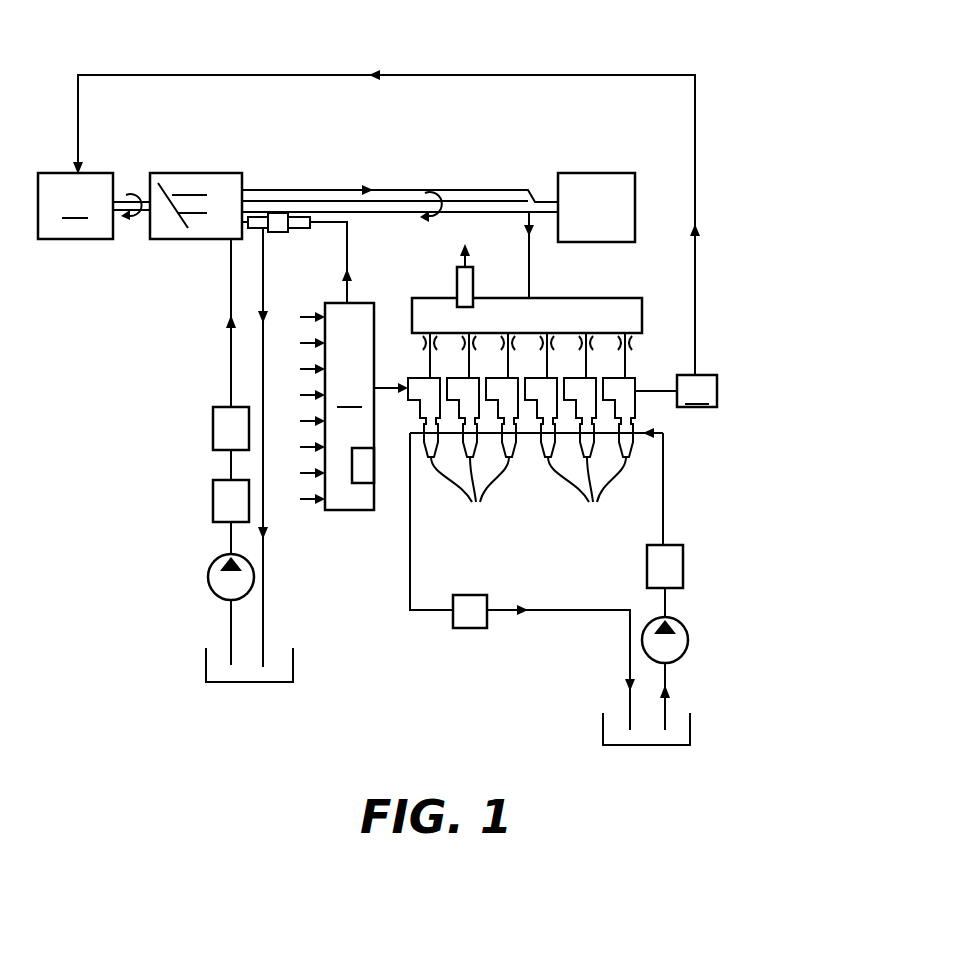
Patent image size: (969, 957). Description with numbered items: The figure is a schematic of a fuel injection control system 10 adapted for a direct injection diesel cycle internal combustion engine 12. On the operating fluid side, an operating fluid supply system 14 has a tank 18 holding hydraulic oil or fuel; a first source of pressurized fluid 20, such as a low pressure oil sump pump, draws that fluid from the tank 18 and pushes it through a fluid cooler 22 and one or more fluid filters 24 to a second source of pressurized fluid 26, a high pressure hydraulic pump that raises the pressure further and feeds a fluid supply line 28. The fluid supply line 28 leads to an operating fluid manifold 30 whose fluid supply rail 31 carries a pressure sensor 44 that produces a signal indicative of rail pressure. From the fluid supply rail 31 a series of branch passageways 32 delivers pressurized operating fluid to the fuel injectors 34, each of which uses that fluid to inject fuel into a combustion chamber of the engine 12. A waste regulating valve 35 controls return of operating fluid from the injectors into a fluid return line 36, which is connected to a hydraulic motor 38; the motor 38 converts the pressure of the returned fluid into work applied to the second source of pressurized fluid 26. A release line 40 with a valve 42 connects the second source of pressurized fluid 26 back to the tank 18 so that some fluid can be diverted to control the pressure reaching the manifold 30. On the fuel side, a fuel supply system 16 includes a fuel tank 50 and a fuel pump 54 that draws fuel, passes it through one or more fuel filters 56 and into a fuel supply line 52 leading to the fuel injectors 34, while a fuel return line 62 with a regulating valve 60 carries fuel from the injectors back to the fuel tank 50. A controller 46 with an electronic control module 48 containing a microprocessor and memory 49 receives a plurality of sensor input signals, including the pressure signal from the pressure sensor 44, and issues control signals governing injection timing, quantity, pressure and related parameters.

The fuel injection control system 10 is at (134, 626).
The internal combustion engine 12 is at (610, 162).
The operating fluid supply system 14 is at (138, 500).
The fuel supply system 16 is at (621, 586).
The tank 18 is at (293, 661).
The first source of pressurized fluid 20 is at (208, 576).
The fluid cooler 22 is at (213, 500).
The fluid filter 24 is at (213, 430).
The second source of pressurized fluid 26 is at (195, 240).
The fluid supply line 28 is at (413, 190).
The operating fluid manifold 30 is at (522, 289).
The fluid supply rail 31 is at (437, 298).
The branch passageways 32 is at (628, 366).
The fuel injector 34 is at (528, 496).
The waste regulating valve 35 is at (676, 391).
The fluid return line 36 is at (224, 74).
The hydraulic motor 38 is at (75, 206).
The release line 40 is at (265, 264).
The valve 42 is at (288, 232).
The pressure sensor 44 is at (477, 286).
The controller 46 is at (342, 446).
The electronic control module 48 is at (349, 406).
The memory 49 is at (360, 484).
The fuel tank 50 is at (603, 728).
The fuel supply line 52 is at (666, 522).
The fuel pump 54 is at (689, 634).
The fuel filter 56 is at (684, 562).
The regulating valve 60 is at (472, 630).
The fuel return line 62 is at (410, 562).